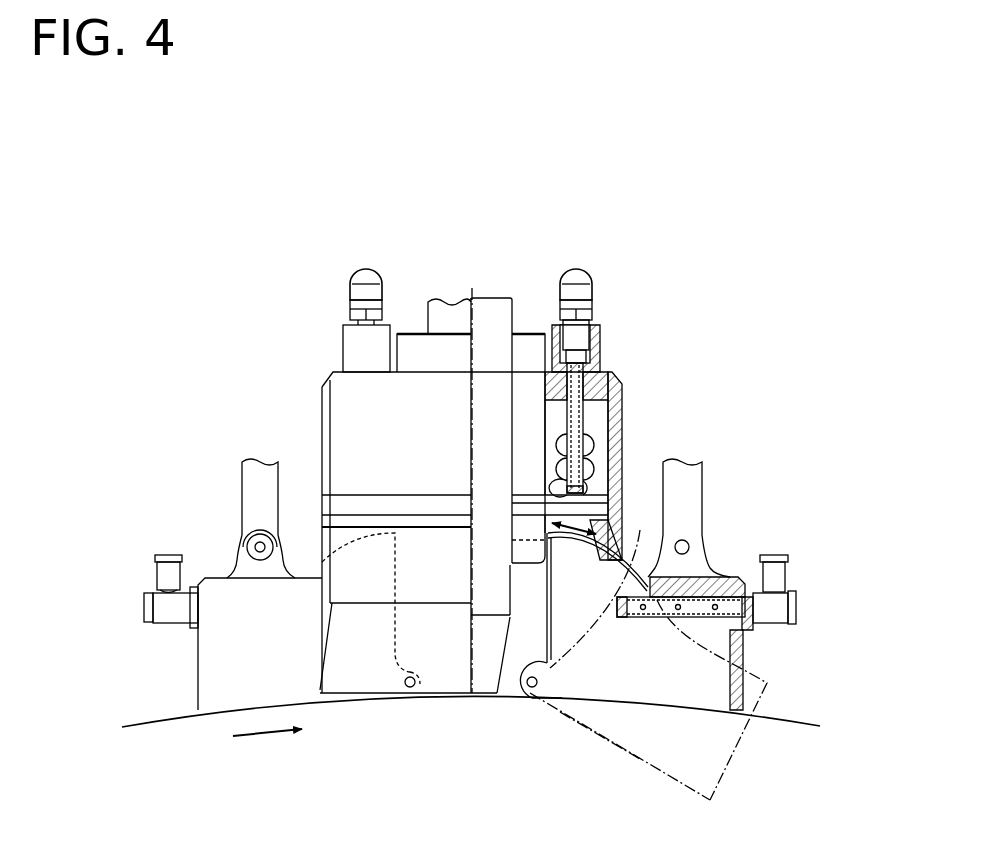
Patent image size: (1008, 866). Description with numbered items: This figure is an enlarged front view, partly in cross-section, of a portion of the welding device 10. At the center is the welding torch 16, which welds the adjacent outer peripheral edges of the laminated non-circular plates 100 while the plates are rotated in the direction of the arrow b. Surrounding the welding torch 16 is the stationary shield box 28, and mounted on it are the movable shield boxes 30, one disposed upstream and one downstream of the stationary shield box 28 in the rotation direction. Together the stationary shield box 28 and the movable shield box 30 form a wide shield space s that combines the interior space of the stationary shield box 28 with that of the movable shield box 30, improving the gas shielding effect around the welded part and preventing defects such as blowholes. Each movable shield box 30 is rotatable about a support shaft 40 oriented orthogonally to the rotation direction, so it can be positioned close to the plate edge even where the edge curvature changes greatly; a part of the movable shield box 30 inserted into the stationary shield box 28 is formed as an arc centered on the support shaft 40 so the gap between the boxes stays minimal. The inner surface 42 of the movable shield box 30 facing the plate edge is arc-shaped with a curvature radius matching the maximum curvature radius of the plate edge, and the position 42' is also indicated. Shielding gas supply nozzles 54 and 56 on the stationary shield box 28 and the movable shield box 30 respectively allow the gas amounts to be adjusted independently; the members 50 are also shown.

The welding device 10 is at (489, 133).
The welding torch 16 is at (452, 320).
The stationary shield box 28 is at (317, 412).
The movable shield box 30 is at (215, 592).
The support shaft 40 is at (410, 687).
The inner surface 42 is at (460, 718).
The cut film piece 42' is at (600, 774).
The guide posts 50 is at (248, 485).
The shielding gas supply nozzle 54 is at (590, 413).
The shielding gas supply nozzle 56 is at (640, 530).
The non-circular plate 100 is at (150, 720).
The shield space s is at (497, 787).
The arrow indicating rotation direction b is at (267, 735).